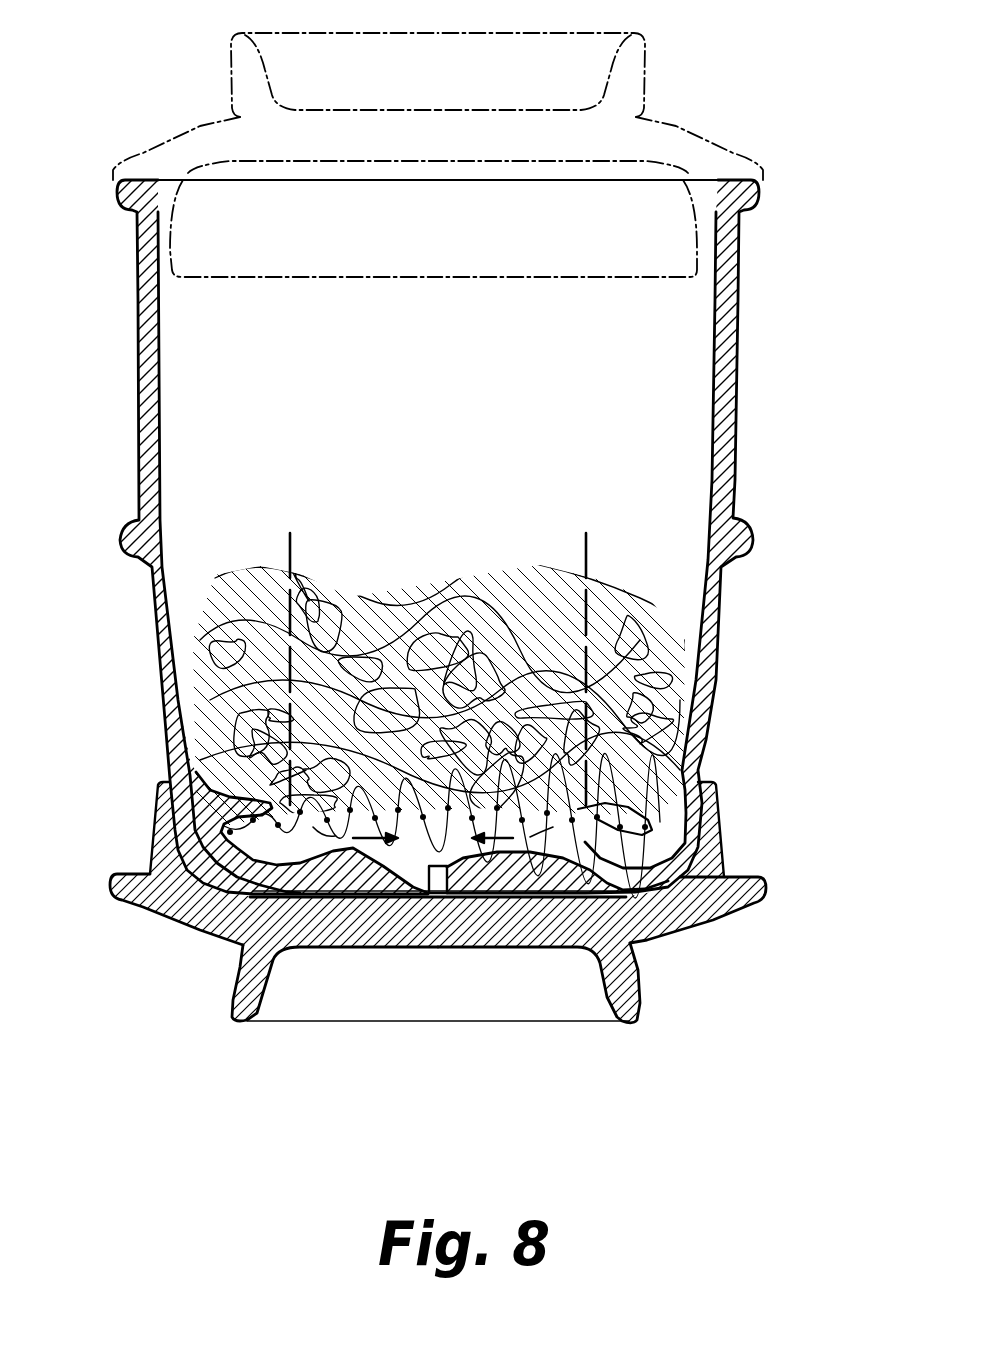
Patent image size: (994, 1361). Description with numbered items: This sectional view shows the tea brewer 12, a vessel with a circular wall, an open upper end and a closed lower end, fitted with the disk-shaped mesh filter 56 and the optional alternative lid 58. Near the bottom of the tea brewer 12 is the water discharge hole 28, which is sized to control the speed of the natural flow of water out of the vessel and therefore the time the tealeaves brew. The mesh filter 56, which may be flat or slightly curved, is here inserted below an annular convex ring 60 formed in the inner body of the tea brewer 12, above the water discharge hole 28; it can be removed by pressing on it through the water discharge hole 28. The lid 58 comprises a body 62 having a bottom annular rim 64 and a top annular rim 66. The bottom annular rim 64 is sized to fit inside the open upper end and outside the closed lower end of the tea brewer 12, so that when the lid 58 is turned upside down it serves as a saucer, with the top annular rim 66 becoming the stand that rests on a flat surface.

The tea brewer 12 is at (727, 353).
The water discharge hole 28 is at (435, 883).
The mesh filter 56 is at (575, 820).
The optional alternative lid 58 is at (688, 125).
The annular convex ring 60 is at (645, 810).
The body 62 is at (197, 143).
The bottom annular rim 64 is at (728, 235).
The top annular rim 66 is at (627, 68).